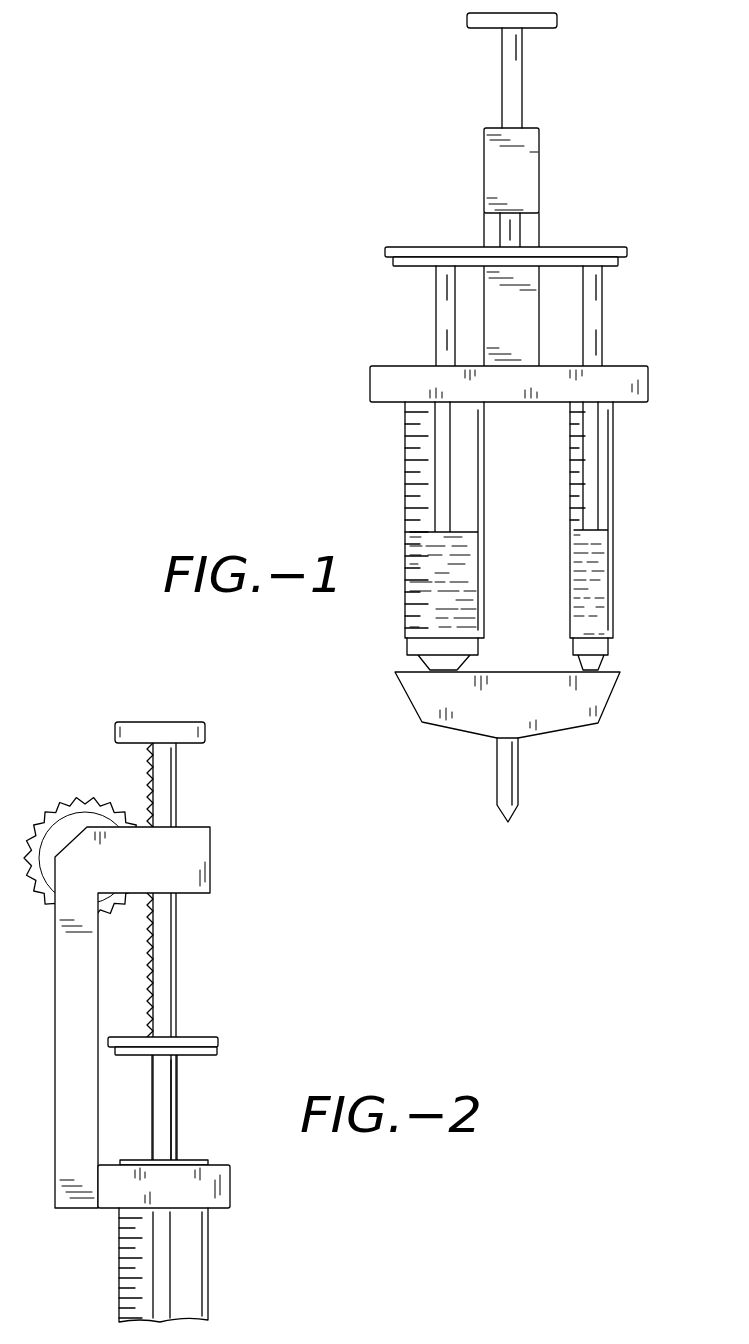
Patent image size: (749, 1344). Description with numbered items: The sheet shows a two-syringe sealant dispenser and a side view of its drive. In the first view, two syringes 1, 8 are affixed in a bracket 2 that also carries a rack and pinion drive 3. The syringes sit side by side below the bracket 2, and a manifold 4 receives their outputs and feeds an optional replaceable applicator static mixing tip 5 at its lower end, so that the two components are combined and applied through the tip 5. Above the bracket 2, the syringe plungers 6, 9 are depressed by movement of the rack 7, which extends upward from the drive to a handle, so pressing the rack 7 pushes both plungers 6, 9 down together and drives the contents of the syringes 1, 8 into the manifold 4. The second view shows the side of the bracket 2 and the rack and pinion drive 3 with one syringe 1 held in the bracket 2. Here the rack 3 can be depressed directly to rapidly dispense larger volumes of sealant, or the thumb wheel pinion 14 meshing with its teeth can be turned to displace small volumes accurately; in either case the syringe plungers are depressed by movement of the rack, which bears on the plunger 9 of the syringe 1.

In FIG. 1, the syringe 1 is at (465, 588).
In FIG. 2, the syringe 1 is at (213, 1267).
In FIG. 1, the bracket 2 is at (648, 380).
In FIG. 2, the bracket 2 is at (225, 1157).
In FIG. 1, the rack and pinion drive 3 is at (546, 177).
In FIG. 2, the rack and pinion drive 3 is at (162, 787).
In FIG. 1, the manifold 4 is at (604, 708).
In FIG. 1, the replaceable applicator static mixing tip 5 is at (519, 782).
In FIG. 1, the syringe plunger 6 is at (603, 316).
In FIG. 1, the rack 7 is at (530, 82).
In FIG. 1, the syringe 8 is at (608, 505).
In FIG. 1, the syringe plunger 9 is at (436, 312).
In FIG. 2, the syringe plunger 9 is at (182, 1090).
In FIG. 2, the thumb wheel pinion 14 is at (128, 804).